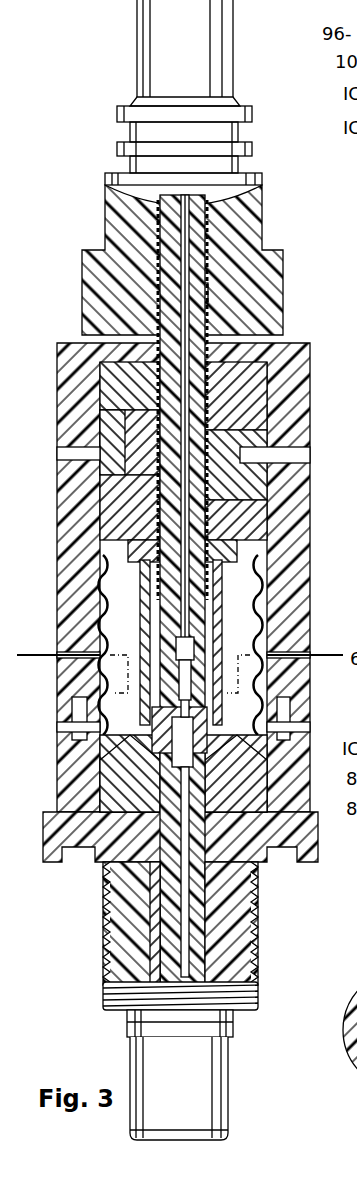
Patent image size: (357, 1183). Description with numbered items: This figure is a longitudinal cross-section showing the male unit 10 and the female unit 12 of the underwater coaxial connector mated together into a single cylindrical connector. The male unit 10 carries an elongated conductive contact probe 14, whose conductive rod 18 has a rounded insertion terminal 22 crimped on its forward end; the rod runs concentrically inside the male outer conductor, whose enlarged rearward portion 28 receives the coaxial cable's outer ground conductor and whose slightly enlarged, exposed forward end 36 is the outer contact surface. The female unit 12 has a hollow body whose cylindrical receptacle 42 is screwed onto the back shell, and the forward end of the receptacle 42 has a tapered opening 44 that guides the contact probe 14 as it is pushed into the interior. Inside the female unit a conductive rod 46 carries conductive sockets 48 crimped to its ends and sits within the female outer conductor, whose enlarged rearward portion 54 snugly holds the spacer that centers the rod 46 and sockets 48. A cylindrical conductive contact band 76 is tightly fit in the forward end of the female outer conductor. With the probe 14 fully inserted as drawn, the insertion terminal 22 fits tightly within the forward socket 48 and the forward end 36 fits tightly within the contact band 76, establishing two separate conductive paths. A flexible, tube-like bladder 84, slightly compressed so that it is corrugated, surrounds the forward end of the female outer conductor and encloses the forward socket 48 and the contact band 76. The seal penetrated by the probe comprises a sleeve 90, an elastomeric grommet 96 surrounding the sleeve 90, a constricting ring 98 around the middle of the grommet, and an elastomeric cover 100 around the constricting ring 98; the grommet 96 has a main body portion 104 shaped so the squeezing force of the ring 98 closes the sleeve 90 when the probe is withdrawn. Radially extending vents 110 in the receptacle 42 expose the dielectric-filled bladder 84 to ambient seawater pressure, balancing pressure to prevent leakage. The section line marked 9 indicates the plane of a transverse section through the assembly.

The section line 9- 9 is at (25, 645).
The male unit 10 is at (100, 158).
The female unit 12 is at (96, 957).
The contact probe 14 is at (230, 534).
The conductive rod 18 is at (182, 545).
The insertion terminal 22 is at (183, 680).
The rearward portion of the outer conductor 28 is at (147, 18).
The forward end of the outer conductor 36 is at (152, 606).
The receptacle 42 is at (297, 562).
The tapered opening 44 is at (82, 304).
The conductive rod 46 is at (182, 890).
The conductive sockets 48 is at (170, 740).
The enlarged rearward portion 54 is at (212, 1068).
The contact band 76 is at (225, 552).
The bladder 84 is at (97, 667).
The sleeve 90 is at (220, 486).
The grommet 96 is at (107, 413).
The constricting ring 98 is at (100, 438).
The cover 100 is at (100, 455).
The main body portion 104 is at (270, 402).
The vents 110 is at (295, 455).